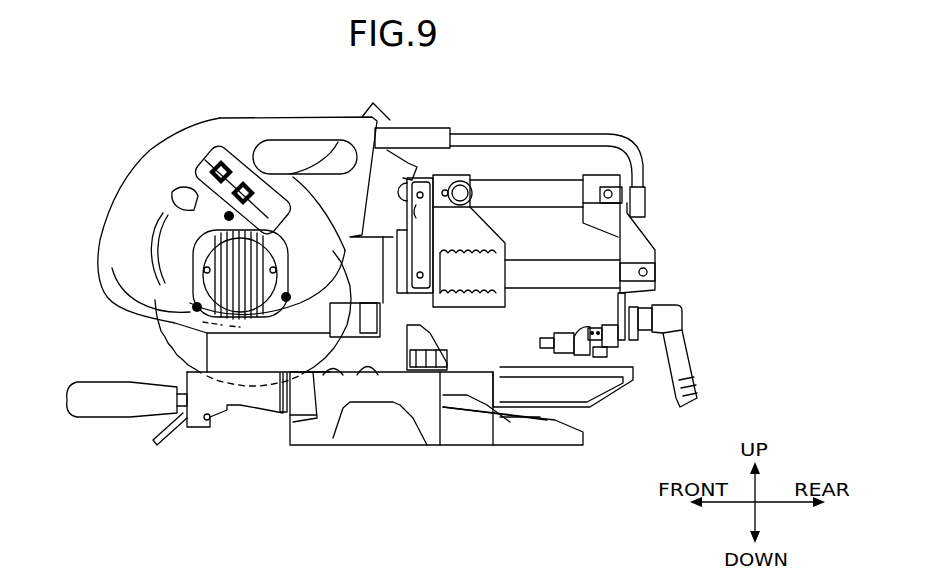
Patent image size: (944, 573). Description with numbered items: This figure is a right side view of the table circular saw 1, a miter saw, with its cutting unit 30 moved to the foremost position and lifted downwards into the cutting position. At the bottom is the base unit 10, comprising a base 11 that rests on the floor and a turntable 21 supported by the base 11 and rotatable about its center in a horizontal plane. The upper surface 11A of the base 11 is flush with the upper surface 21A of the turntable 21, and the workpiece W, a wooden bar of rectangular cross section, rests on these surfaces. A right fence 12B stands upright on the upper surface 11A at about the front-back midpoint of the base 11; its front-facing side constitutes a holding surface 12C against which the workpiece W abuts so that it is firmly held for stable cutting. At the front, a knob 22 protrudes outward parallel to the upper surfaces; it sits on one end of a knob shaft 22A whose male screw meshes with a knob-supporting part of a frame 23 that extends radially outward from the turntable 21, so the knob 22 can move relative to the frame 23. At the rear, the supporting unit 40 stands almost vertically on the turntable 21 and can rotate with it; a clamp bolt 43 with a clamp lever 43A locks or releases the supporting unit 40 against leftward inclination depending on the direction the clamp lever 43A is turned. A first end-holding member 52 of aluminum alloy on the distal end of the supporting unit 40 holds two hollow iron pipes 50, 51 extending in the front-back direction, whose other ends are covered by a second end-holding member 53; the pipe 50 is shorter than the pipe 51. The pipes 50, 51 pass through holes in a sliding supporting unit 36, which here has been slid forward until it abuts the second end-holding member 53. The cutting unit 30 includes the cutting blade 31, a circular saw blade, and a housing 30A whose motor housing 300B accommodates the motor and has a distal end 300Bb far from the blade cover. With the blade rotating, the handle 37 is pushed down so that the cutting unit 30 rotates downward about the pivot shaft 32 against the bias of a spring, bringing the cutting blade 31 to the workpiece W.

The table circular saw 1 is at (639, 114).
The base unit 10 is at (638, 412).
The base 11 is at (305, 441).
The upper surface 11A is at (369, 372).
The right fence 12B is at (415, 319).
The holding surface 12C is at (389, 355).
The turntable 21 is at (472, 388).
The upper surface 21A is at (330, 372).
The knob 22 is at (86, 384).
The knob shaft 22A is at (153, 440).
The frame 23 is at (197, 428).
The cutting unit 30 is at (175, 129).
The housing 30A is at (298, 193).
The motor housing 300B is at (307, 178).
The distal end 300Bb is at (192, 311).
The cutting blade 31 is at (252, 386).
The pivot shaft 32 is at (462, 183).
The sliding supporting unit 36 is at (590, 265).
The handle 37 is at (125, 186).
The supporting unit 40 is at (656, 296).
The clamp bolt 43 is at (690, 316).
The clamp lever 43A is at (694, 366).
The pipe 50 is at (560, 176).
The pipe 51 is at (548, 340).
The first end-holding member 52 is at (610, 176).
The second end-holding member 53 is at (420, 192).
The workpiece W is at (242, 358).